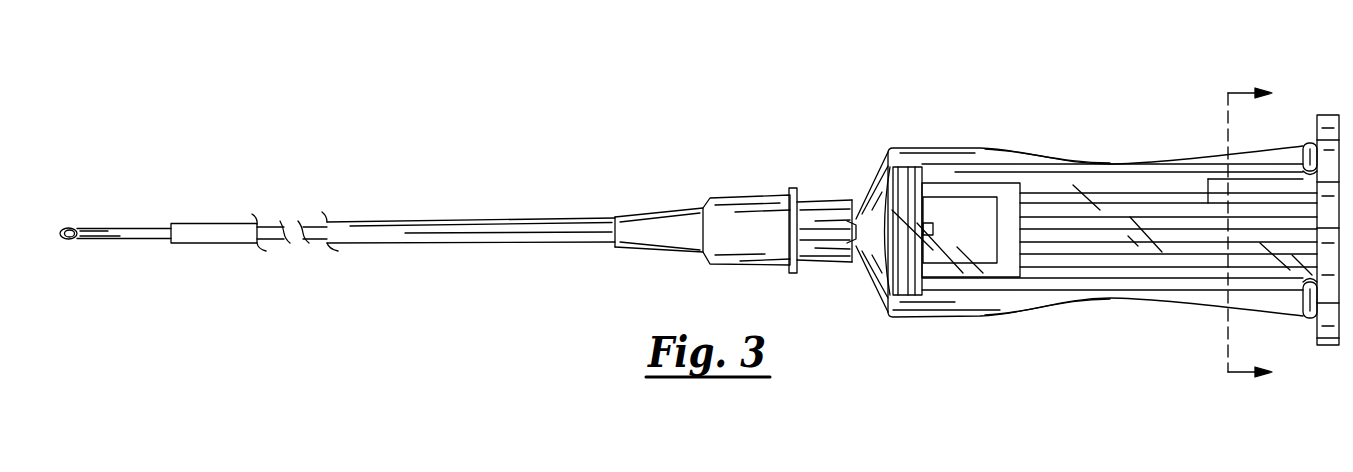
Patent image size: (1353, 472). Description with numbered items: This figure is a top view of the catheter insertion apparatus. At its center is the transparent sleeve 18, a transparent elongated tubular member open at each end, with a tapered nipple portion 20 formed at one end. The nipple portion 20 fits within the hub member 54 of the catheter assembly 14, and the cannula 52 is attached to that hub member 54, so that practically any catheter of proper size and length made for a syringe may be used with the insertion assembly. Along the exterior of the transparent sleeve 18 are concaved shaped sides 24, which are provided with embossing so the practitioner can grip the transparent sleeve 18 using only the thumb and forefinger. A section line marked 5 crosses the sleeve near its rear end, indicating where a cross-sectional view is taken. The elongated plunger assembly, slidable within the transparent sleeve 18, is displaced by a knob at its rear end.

The catheter assembly 14 is at (652, 181).
The cannula 52 is at (385, 243).
The hub member 54 is at (744, 206).
The nipple portion 20 is at (836, 202).
The transparent sleeve 18 is at (948, 162).
The concaved shaped sides 24 is at (1090, 162).
The section line 5- 5 is at (1250, 236).